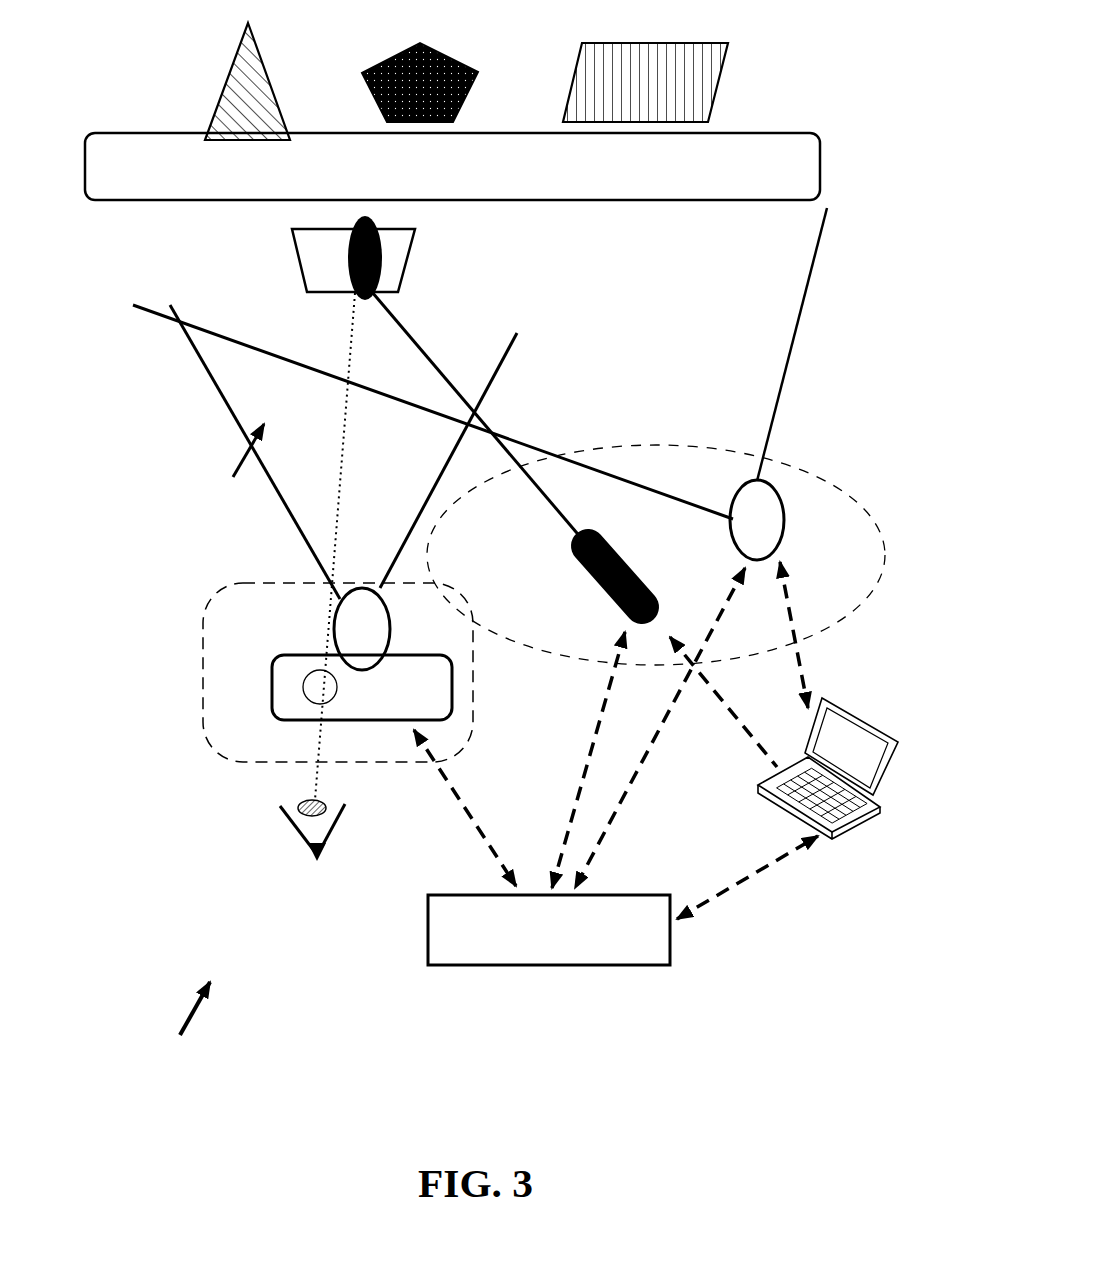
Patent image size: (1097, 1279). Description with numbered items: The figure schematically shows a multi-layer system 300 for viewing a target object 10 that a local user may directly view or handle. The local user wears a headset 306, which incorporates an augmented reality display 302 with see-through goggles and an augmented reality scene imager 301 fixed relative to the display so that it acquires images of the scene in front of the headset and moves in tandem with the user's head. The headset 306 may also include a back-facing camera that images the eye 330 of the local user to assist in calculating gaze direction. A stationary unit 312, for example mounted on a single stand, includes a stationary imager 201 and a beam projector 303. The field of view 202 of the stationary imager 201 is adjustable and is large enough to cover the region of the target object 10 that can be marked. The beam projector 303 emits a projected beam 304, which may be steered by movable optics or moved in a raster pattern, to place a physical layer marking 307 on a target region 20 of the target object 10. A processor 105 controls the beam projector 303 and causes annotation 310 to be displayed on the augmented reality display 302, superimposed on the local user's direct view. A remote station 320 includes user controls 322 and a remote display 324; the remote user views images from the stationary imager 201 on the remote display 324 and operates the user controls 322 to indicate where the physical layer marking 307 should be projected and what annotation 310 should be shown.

The target object 10 is at (147, 110).
The target region 20 is at (297, 262).
The physical layer marking 307 is at (382, 270).
The augmented reality display 302 is at (480, 770).
The projected beam 304 is at (543, 500).
The beam projector 303 is at (588, 583).
The stationary unit 312 is at (625, 446).
The stationary imager 201 is at (730, 536).
The field of view 202 is at (738, 398).
The augmented reality scene imager 301 is at (334, 622).
The annotation 310 is at (303, 680).
The headset 306 is at (217, 730).
The eye 330 is at (298, 834).
The processor 105 is at (526, 968).
The remote station 320 is at (808, 742).
The user controls 322 is at (788, 815).
The remote display 324 is at (853, 740).
The multi-layer system 300 is at (179, 1032).